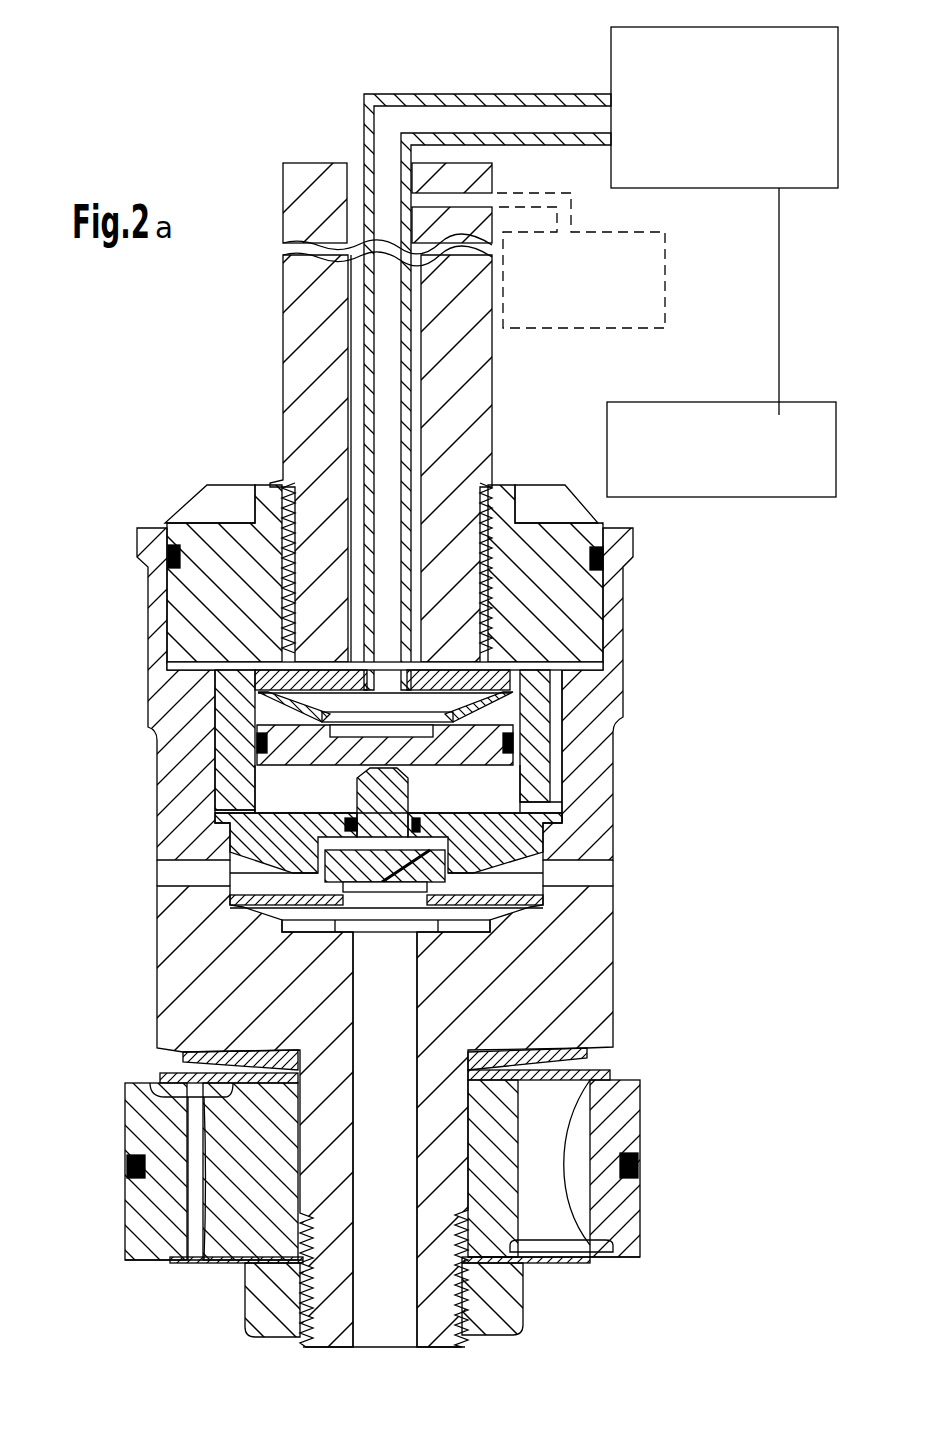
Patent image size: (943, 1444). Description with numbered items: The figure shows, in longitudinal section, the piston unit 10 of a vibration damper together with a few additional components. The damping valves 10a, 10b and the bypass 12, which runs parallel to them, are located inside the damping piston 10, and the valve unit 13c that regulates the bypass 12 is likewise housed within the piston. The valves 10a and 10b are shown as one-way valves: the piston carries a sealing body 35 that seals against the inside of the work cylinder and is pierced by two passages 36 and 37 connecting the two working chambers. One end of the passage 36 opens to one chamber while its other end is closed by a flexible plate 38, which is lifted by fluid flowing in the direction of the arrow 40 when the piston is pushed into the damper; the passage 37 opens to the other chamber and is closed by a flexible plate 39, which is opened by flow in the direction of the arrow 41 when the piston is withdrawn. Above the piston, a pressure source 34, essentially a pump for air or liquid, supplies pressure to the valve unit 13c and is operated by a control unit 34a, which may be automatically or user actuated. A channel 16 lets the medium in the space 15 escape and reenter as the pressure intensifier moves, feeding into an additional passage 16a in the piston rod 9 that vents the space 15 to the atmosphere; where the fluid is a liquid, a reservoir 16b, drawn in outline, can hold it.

The piston rod 9 is at (473, 413).
The piston unit 10 is at (573, 1010).
The damping valve 10a is at (160, 1155).
The damping valve 10b is at (608, 1144).
The bypass 12 is at (410, 960).
The valve unit 13c is at (622, 739).
The space 15 is at (500, 790).
The channel 16 is at (557, 695).
The additional passage 16a is at (413, 465).
The reservoir 16b is at (653, 268).
The pressure source 34 is at (818, 175).
The control unit 34a is at (805, 415).
The sealing body 35 is at (620, 1113).
The passage 36 is at (577, 1193).
The passage 37 is at (190, 1132).
The flexible plate 38 is at (620, 1068).
The flexible plate 39 is at (227, 1263).
The arrow 40 is at (593, 1302).
The arrow 41 is at (178, 1263).